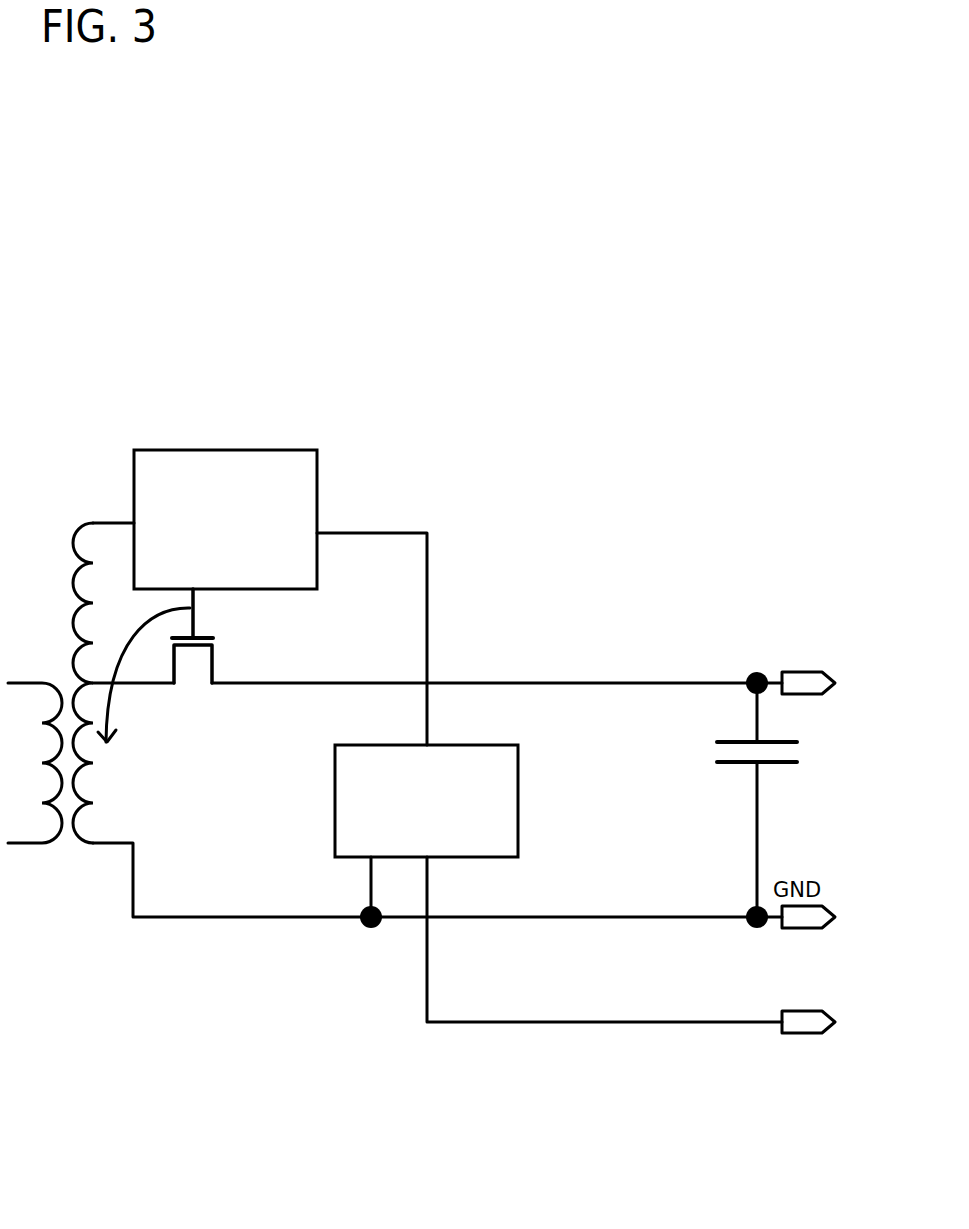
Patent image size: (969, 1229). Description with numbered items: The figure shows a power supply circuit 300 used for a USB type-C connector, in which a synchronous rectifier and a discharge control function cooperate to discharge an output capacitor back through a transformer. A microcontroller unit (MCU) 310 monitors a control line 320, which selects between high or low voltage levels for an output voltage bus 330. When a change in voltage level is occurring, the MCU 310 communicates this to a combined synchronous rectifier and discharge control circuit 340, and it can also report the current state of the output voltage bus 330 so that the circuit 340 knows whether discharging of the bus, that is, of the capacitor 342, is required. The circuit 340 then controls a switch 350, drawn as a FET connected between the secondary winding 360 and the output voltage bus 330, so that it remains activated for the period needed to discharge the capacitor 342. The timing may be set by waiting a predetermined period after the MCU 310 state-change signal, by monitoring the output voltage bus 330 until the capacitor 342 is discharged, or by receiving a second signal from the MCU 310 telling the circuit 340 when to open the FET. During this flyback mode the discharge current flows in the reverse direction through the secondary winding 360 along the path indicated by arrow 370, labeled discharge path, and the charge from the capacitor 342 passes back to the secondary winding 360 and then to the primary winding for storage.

The power supply circuit 300 is at (266, 364).
The microcontroller unit (MCU) 310 is at (518, 807).
The control line 320 is at (597, 1022).
The output voltage bus 330 is at (756, 674).
The synchronous rectifier and discharge control circuit 340 is at (317, 500).
The capacitor 342 is at (732, 765).
The switch (FET) 350 is at (213, 672).
The secondary winding 360 is at (88, 845).
The arrow (discharge path) 370 is at (55, 935).